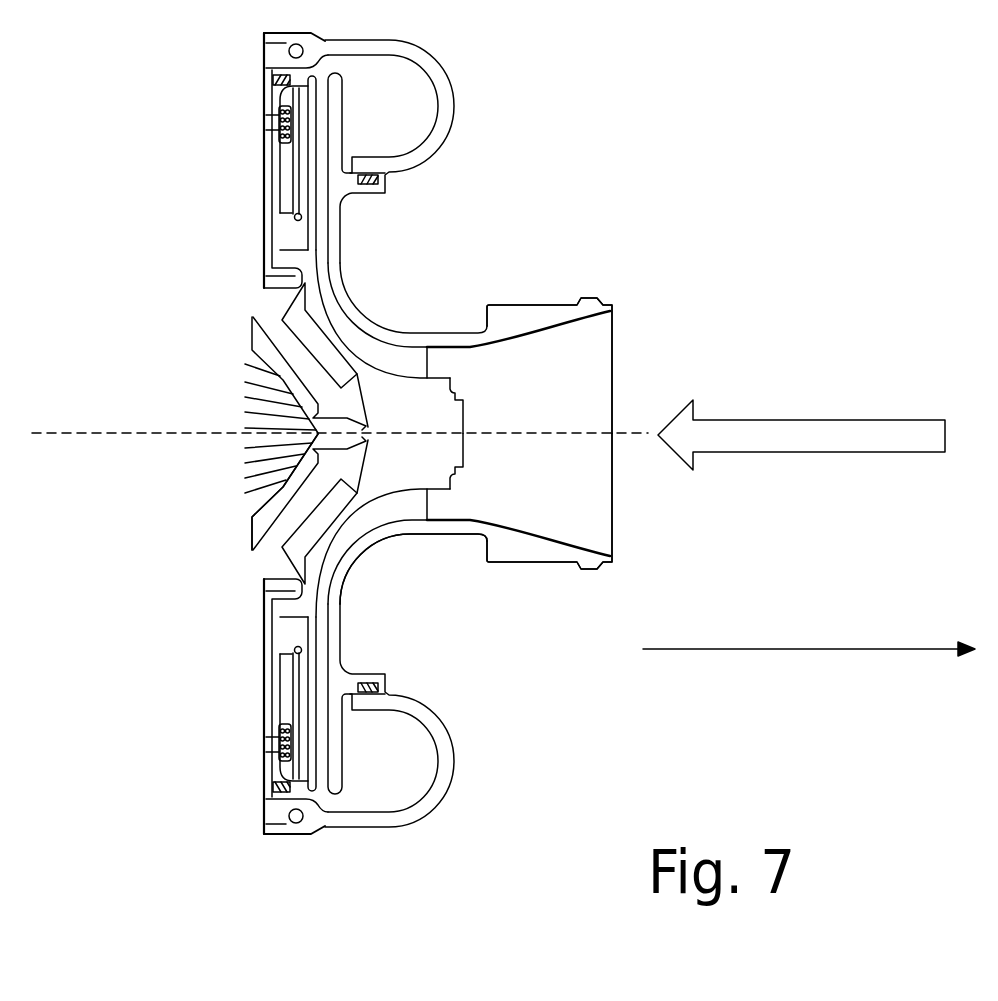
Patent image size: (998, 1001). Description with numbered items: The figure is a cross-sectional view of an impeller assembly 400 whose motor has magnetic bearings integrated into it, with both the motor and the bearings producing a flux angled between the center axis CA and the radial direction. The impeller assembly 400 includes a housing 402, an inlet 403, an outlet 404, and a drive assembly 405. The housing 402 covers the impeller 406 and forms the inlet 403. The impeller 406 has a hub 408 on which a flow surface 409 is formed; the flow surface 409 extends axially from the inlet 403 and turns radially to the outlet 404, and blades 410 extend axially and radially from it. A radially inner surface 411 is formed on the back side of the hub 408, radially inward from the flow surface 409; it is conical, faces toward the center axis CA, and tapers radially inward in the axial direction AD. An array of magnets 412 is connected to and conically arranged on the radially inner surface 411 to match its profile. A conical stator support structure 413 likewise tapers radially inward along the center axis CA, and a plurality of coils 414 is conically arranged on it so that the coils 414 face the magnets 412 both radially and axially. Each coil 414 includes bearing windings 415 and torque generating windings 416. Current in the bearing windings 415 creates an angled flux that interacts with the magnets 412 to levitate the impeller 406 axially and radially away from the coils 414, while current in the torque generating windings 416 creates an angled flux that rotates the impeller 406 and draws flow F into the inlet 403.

The impeller assembly 400 is at (632, 118).
The housing 402 is at (548, 303).
The inlet 403 is at (616, 326).
The outlet 404 is at (405, 753).
The drive assembly 405 is at (222, 260).
The impeller 406 is at (373, 385).
The hub 408 is at (368, 473).
The flow surface 409 is at (338, 540).
The blades 410 is at (361, 347).
The radially inner surface 411 is at (372, 437).
The array of magnets 412 is at (297, 322).
The stator support structure 413 is at (300, 403).
The coils 414 is at (246, 466).
The bearing windings 415 is at (262, 510).
The torque generating windings 416 is at (323, 410).
The center axis CA is at (63, 433).
The flow F is at (793, 417).
The axial direction AD is at (732, 647).